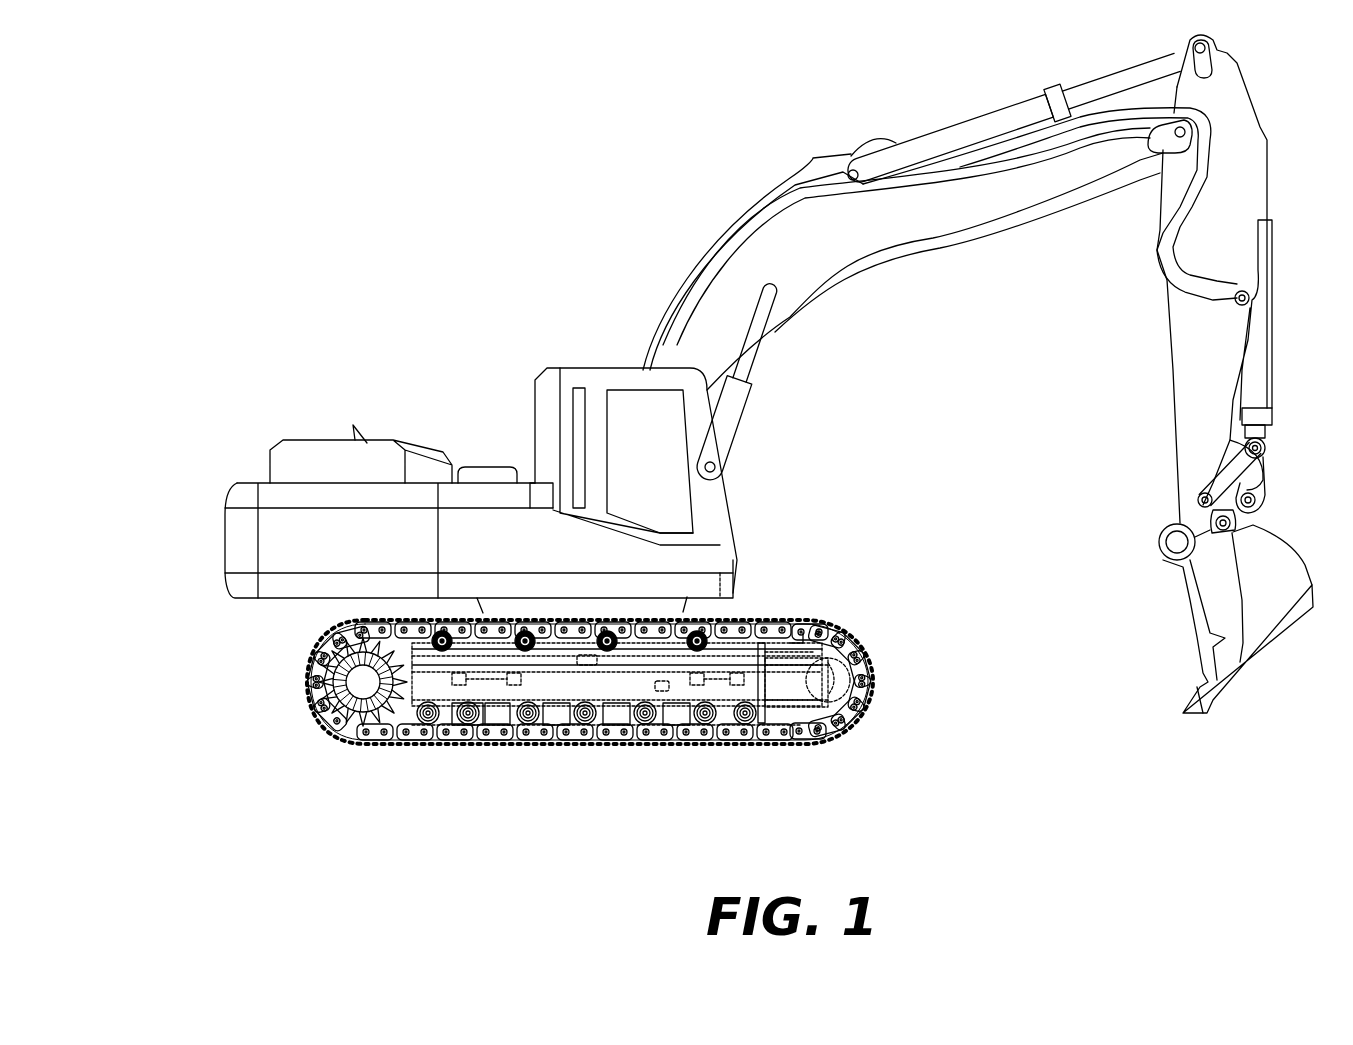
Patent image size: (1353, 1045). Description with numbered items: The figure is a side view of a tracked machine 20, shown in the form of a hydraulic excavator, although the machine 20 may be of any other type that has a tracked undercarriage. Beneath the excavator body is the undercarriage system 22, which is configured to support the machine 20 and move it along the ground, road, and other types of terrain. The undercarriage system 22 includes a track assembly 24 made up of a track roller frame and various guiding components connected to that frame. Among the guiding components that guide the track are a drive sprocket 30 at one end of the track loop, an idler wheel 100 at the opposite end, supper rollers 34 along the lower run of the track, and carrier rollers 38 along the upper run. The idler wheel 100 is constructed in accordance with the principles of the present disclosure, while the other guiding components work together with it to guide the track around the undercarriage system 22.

The machine 20 is at (769, 431).
The undercarriage system 22 is at (642, 679).
The track assembly 24 is at (877, 682).
The drive sprocket 30 is at (358, 687).
The supper rollers 34 is at (536, 729).
The carrier rollers 38 is at (520, 647).
The idler wheel 100 is at (840, 700).